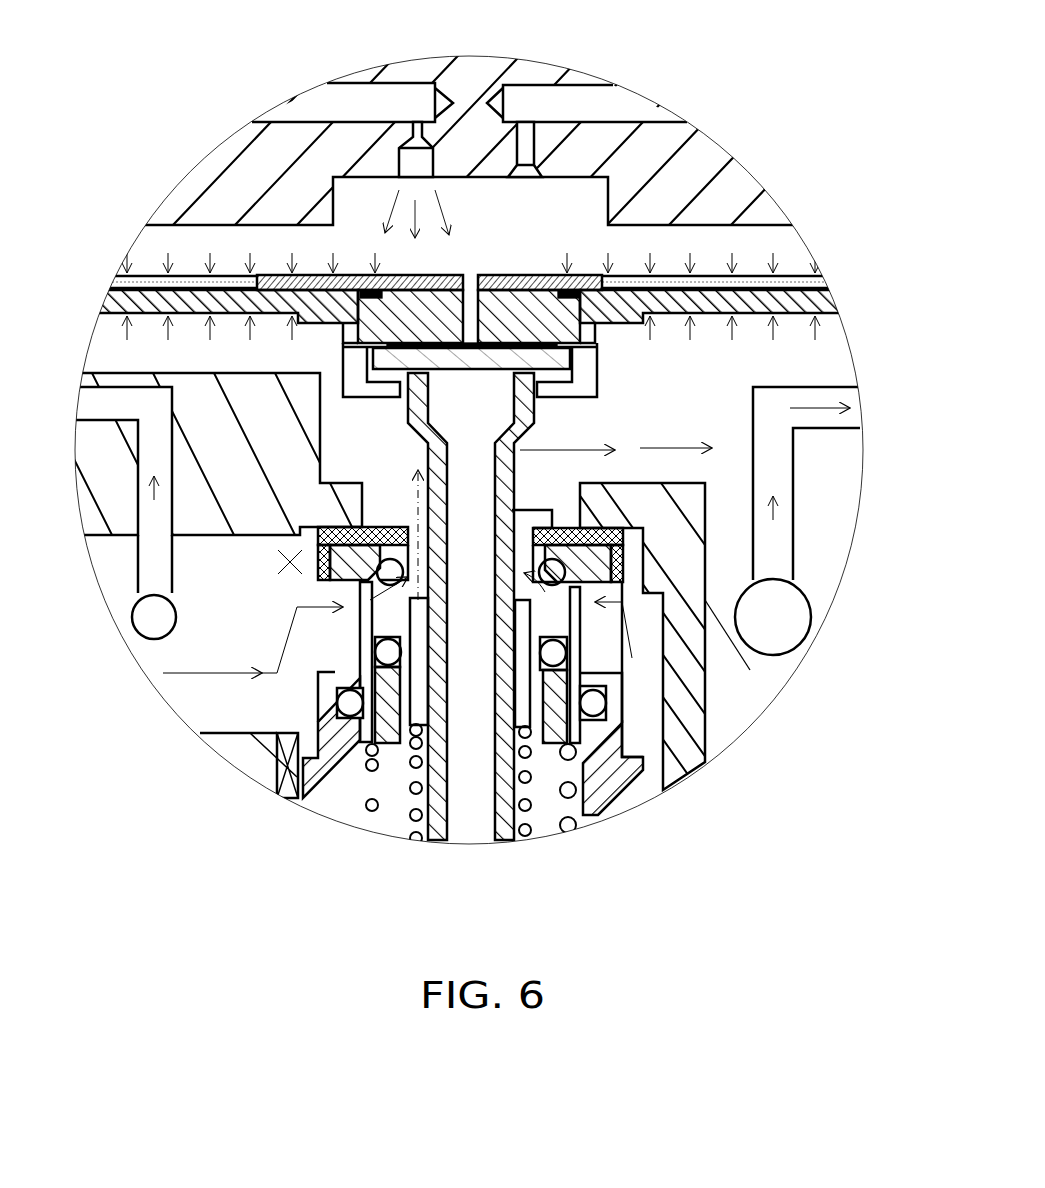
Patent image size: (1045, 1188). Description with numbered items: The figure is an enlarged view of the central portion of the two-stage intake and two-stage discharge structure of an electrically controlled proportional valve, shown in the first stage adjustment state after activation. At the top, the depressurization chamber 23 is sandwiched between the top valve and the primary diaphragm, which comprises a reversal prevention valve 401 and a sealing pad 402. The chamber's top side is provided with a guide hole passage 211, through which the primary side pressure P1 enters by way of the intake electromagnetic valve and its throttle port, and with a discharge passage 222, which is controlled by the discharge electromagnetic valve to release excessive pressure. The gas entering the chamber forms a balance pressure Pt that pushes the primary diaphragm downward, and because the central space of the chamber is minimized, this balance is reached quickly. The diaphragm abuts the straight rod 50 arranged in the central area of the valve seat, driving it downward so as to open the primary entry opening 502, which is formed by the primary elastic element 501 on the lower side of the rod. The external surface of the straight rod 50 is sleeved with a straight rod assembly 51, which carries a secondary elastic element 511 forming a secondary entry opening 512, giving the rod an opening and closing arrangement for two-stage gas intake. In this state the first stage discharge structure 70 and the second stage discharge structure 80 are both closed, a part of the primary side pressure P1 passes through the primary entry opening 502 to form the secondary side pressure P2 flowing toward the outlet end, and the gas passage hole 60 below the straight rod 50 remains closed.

The guide hole passage 211 is at (366, 82).
The discharge passage 222 is at (579, 82).
The first stage discharge structure 70 is at (540, 146).
The balance pressure Pt is at (444, 210).
The depressurization chamber 23 is at (200, 243).
The reversal prevention valve 401 is at (497, 275).
The sealing pad 402 is at (573, 358).
The straight rod 50 is at (540, 413).
The primary side pressure P1 is at (157, 487).
The secondary side pressure P2 is at (773, 493).
The straight rod assembly 51 is at (318, 575).
The secondary entry opening 512 is at (630, 548).
The primary entry opening 502 is at (360, 670).
The primary elastic element 501 is at (410, 788).
The secondary elastic element 511 is at (598, 772).
The gas passage hole 60 is at (450, 826).
The second stage discharge structure 80 is at (503, 760).